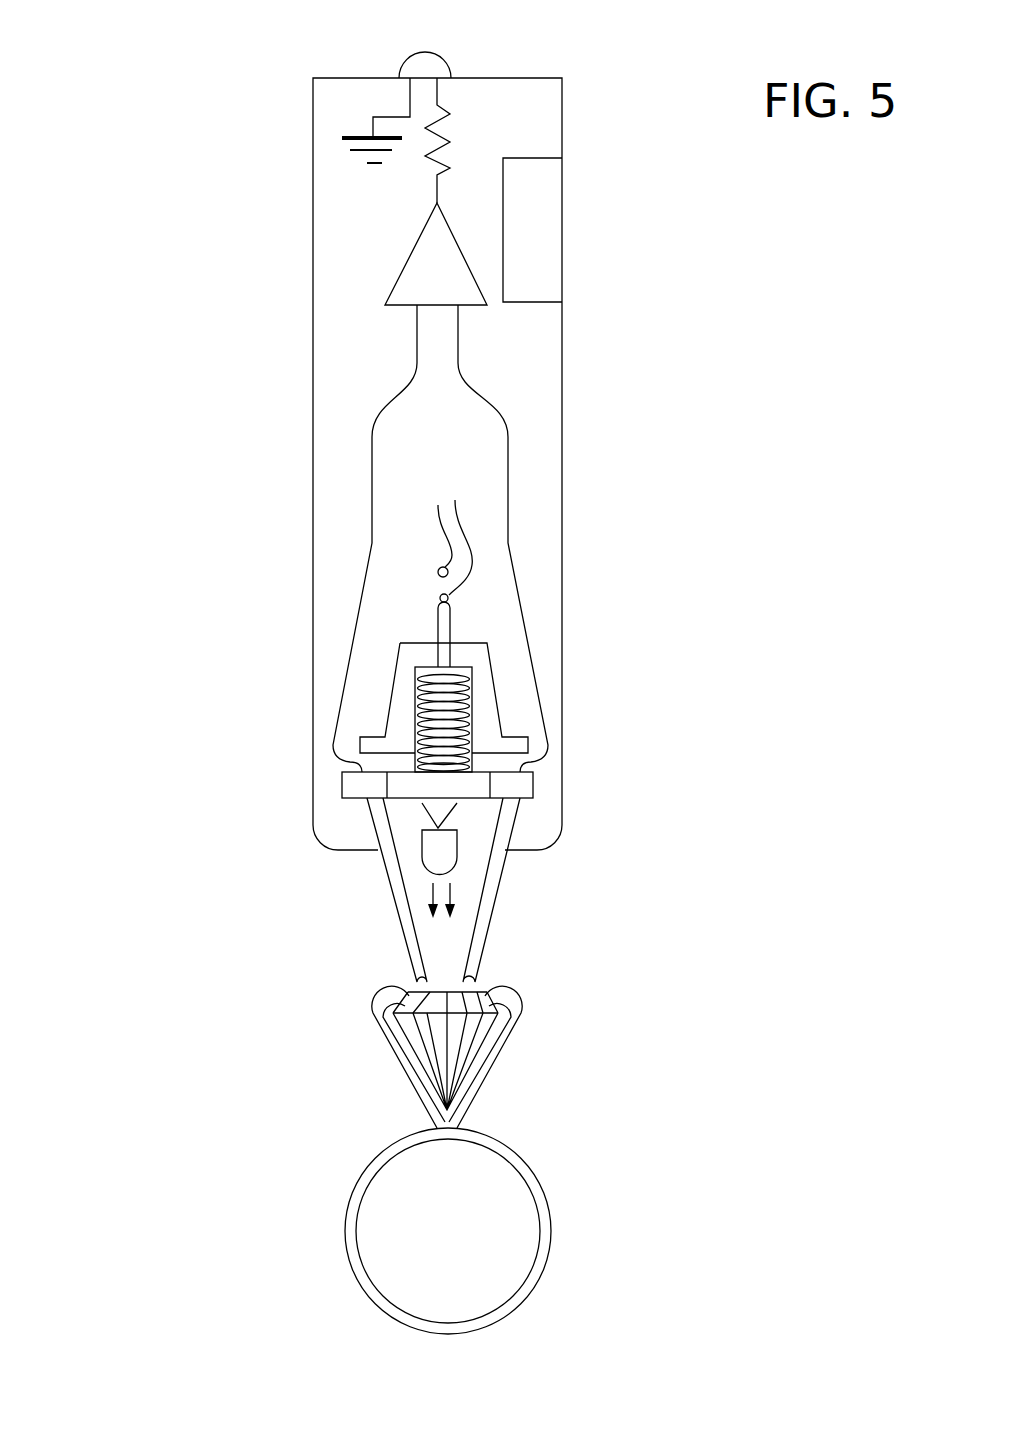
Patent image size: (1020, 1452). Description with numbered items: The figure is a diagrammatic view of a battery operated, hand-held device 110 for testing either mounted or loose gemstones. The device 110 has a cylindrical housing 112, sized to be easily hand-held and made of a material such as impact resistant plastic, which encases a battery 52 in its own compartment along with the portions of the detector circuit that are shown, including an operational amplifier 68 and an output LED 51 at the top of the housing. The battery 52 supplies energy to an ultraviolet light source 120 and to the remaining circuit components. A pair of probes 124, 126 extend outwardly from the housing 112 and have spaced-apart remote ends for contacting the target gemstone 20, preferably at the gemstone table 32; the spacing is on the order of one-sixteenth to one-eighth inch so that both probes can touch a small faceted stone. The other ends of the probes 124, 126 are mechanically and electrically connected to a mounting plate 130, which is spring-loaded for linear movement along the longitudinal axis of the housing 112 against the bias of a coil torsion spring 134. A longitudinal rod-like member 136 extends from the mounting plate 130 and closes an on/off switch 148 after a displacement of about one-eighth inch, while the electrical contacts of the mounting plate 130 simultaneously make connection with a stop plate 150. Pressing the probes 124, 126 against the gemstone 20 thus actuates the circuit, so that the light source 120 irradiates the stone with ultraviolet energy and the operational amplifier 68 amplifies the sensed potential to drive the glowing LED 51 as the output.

The hand-held device 110 is at (212, 184).
The cylindrical housing 112 is at (313, 487).
The LED 51 is at (450, 62).
The battery 52 is at (560, 190).
The operational amplifier 68 is at (408, 253).
The on/off switch 148 is at (497, 493).
The rod-like member 136 is at (448, 625).
The coil torsion spring 134 is at (418, 710).
The stop plate 150 is at (500, 752).
The mounting plate 130 is at (403, 800).
The ultraviolet light source 120 is at (458, 858).
The probe 124 is at (388, 892).
The probe 126 is at (493, 927).
The gemstone table 32 is at (407, 990).
The target gemstone 20 is at (407, 1055).